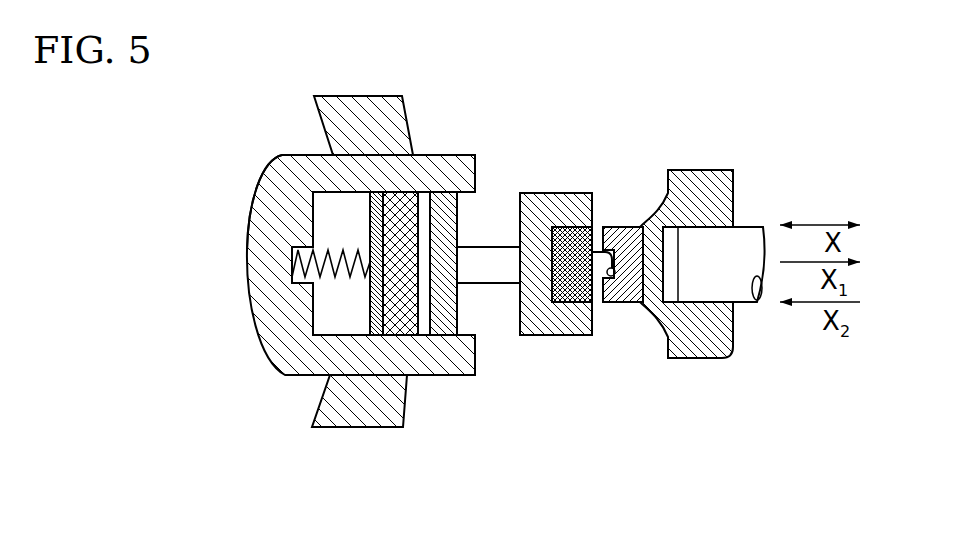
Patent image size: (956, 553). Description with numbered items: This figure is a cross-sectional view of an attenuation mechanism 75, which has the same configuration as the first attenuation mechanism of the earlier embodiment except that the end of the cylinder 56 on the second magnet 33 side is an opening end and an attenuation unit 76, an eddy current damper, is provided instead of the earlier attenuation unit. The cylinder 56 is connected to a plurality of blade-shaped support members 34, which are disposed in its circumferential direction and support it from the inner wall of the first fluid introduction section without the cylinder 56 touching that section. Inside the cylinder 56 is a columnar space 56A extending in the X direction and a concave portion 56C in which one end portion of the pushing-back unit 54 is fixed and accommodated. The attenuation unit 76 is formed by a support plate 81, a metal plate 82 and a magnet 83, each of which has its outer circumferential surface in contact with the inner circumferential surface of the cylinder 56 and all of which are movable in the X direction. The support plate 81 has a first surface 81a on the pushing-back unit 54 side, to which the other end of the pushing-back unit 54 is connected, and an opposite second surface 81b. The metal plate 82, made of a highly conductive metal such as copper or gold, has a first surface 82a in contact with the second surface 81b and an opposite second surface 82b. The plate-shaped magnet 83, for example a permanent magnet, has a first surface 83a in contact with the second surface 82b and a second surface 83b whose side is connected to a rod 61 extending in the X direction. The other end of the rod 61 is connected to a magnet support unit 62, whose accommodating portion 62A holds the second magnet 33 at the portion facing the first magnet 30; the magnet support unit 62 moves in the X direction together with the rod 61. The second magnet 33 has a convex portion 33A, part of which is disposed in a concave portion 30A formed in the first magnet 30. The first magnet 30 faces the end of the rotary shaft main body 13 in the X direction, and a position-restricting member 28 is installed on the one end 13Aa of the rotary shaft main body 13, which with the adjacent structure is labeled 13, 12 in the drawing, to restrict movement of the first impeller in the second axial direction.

The cylinder 56 is at (287, 360).
The space 56A is at (330, 323).
The concave portion 56C is at (292, 252).
The attenuation mechanism 75 is at (240, 236).
The support members 34 is at (363, 112).
The pushing-back unit 54 is at (345, 273).
The first surface 83a is at (370, 250).
The support plate 81 is at (403, 208).
The first surface 81a is at (370, 228).
The second surface 81b is at (404, 325).
The metal plate 82 is at (418, 200).
The first surface 82a is at (369, 240).
The second surface 82b is at (430, 325).
The magnet 83 is at (446, 215).
The second surface 83b is at (458, 213).
The rod 61 is at (499, 263).
The attenuation unit 76 is at (478, 310).
The magnet support unit 62 is at (538, 182).
The accommodating portion 62A is at (585, 236).
The second magnet 33 is at (567, 315).
The convex portion 33A is at (594, 262).
The first magnet 30 is at (620, 214).
The concave portion 30A is at (615, 275).
The position-restricting member 28 is at (654, 184).
The one end 13Aa is at (698, 237).
The rotary shaft main body 13 is at (748, 316).
The rotating body 12 is at (760, 264).